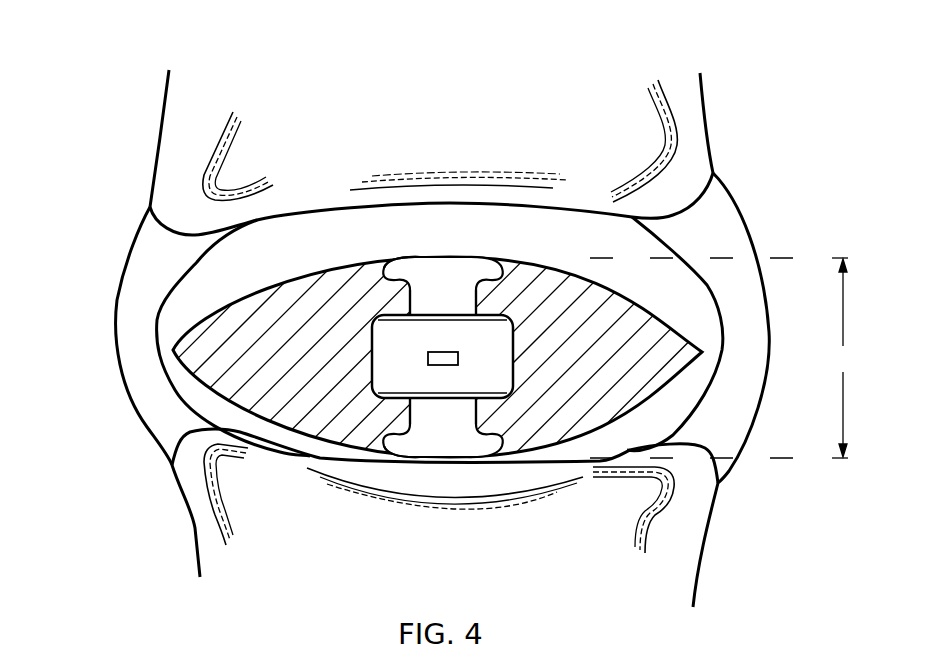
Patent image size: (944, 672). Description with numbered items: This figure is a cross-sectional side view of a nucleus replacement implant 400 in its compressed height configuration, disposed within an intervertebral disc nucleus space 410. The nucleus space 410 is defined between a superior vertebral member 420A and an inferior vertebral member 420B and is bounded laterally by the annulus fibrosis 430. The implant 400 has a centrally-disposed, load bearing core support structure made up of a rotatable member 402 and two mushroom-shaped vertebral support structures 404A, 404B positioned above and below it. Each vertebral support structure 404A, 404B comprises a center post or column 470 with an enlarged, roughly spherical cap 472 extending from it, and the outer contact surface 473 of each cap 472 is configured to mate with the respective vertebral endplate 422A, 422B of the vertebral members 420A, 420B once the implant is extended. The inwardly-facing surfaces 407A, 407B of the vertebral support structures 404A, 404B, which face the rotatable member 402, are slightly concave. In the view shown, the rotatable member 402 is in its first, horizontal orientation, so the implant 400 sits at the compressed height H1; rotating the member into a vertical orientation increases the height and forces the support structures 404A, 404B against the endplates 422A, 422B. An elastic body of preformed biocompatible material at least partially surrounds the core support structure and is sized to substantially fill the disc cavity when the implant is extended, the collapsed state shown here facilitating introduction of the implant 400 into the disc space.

The implant 400 is at (637, 293).
The rotatable member 402 is at (442, 356).
The vertebral support structure 404A is at (473, 277).
The vertebral support structure 404B is at (462, 440).
The inwardly-facing surface 407A is at (428, 312).
The inwardly-facing surface 407B is at (437, 402).
The intervertebral disc nucleus space 410 is at (186, 298).
The superior vertebral member 420A is at (431, 138).
The inferior vertebral member 420B is at (439, 512).
The vertebral endplate 422A is at (268, 222).
The vertebral endplate 422B is at (268, 443).
The annulus fibrosis 430 is at (146, 283).
The center post 470 is at (443, 353).
The cap 472 is at (455, 257).
The outer contact surface 473 is at (438, 270).
The height H1 is at (722, 358).